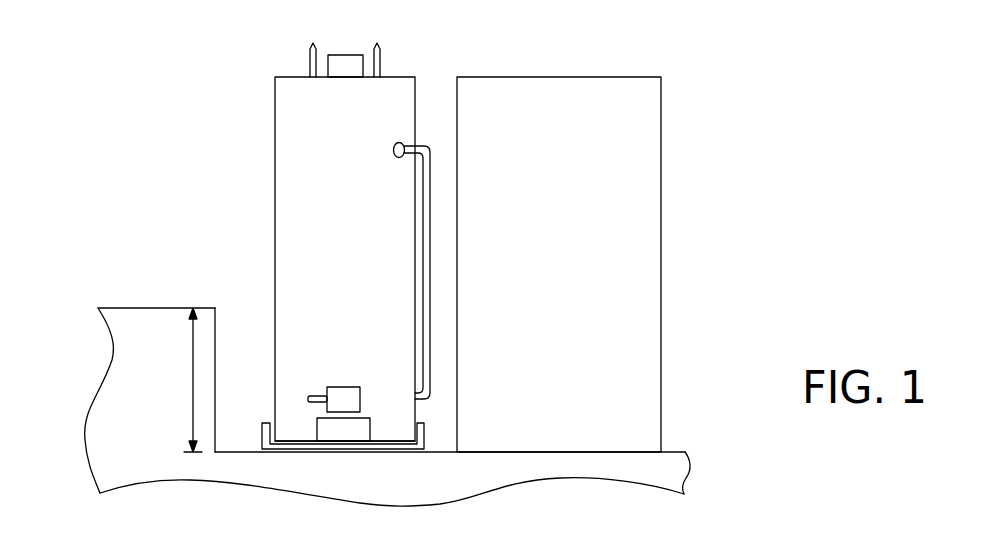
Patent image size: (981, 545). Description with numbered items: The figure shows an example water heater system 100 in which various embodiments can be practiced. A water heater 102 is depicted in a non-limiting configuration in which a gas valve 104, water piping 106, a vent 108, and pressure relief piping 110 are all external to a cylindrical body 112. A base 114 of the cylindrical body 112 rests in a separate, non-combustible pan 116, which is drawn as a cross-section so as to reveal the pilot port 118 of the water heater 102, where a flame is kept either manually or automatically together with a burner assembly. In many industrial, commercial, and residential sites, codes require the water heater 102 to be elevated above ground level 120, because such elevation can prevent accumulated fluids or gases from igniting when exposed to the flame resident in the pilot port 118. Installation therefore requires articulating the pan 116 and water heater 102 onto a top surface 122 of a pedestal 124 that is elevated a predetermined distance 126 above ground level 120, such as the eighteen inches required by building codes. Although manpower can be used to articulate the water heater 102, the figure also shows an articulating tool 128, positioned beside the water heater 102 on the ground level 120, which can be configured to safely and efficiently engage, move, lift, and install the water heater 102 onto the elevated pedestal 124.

The water heater system 100 is at (122, 56).
The water heater 102 is at (363, 267).
The gas valve 104 is at (359, 381).
The water piping 106 is at (298, 59).
The vent 108 is at (347, 55).
The pressure relief piping 110 is at (389, 163).
The cylindrical body 112 is at (275, 168).
The base 114 is at (278, 416).
The pan 116 is at (262, 441).
The pilot port 118 is at (371, 426).
The ground level 120 is at (685, 444).
The top surface 122 is at (156, 298).
The pedestal 124 is at (127, 406).
The predetermined distance 126 is at (177, 380).
The articulating tool 128 is at (585, 444).